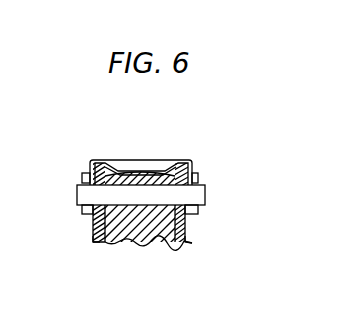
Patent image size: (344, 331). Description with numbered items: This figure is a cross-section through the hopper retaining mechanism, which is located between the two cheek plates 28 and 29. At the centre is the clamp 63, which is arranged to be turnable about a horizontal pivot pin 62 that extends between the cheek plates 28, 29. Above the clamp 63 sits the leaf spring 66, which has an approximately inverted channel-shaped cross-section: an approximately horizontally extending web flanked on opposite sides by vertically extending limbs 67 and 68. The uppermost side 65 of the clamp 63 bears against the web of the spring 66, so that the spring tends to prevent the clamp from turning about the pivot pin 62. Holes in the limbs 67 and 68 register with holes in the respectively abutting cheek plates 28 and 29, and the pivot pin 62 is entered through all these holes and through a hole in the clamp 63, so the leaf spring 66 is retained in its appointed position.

The horizontal pivot pin 62 is at (77, 189).
The clamp 63 is at (138, 245).
The uppermost side of the clamp 65 is at (138, 164).
The leaf spring 66 is at (182, 160).
The vertically extending limb 67 is at (84, 213).
The vertically extending limb 68 is at (198, 217).
The cheek plate 28 is at (93, 239).
The cheek plate 29 is at (190, 243).